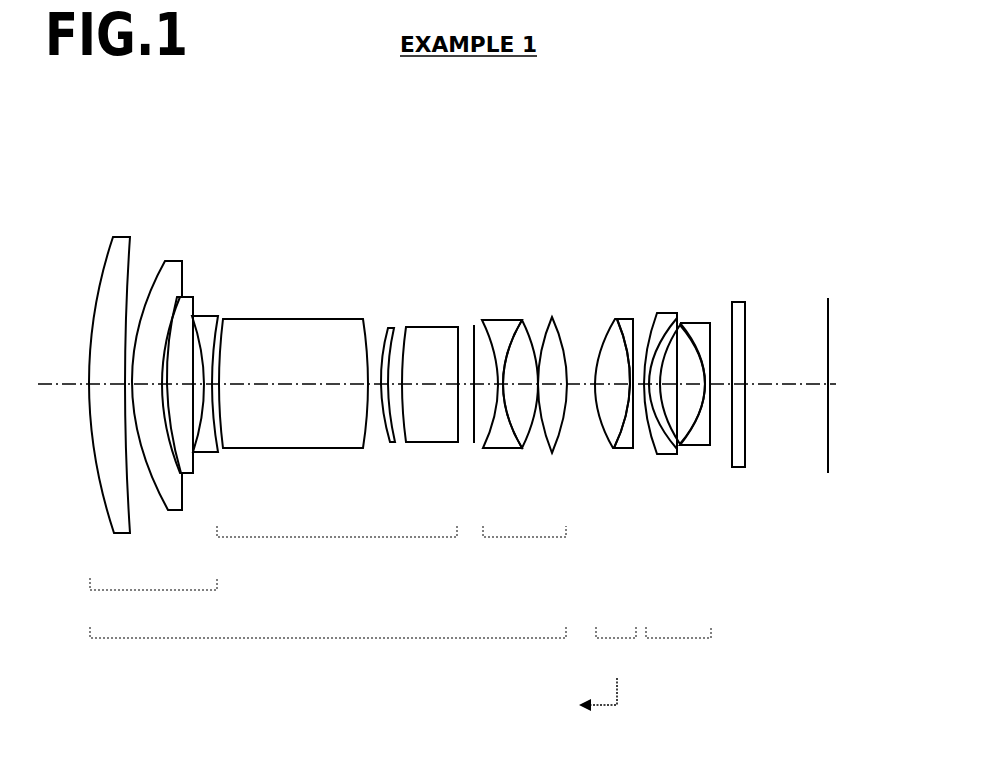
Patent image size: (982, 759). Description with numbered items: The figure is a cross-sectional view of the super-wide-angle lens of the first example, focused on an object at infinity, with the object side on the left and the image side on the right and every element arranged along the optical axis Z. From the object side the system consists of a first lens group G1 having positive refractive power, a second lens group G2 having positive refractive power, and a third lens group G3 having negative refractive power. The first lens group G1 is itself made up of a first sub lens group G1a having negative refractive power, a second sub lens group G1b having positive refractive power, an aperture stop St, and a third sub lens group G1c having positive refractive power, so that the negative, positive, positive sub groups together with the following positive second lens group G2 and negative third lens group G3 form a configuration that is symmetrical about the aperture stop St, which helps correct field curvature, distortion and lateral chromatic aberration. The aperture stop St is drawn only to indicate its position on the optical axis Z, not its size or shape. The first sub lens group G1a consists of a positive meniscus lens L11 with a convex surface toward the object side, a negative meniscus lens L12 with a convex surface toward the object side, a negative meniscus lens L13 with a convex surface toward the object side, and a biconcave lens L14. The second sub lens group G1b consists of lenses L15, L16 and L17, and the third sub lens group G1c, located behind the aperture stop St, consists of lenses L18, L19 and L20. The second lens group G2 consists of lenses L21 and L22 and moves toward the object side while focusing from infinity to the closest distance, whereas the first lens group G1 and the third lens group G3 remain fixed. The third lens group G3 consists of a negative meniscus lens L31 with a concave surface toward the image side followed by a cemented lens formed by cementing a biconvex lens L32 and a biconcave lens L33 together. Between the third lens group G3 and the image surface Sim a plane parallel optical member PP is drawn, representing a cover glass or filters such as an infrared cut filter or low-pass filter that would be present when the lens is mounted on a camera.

The positive meniscus lens L11 is at (118, 237).
The negative meniscus lens L12 is at (172, 261).
The negative meniscus lens L13 is at (183, 297).
The biconcave lens L14 is at (208, 317).
The lens L15 is at (297, 330).
The lens L16 is at (390, 328).
The lens L17 is at (430, 337).
The lens L18 is at (500, 327).
The lens L19 is at (520, 322).
The lens L20 is at (552, 317).
The lens L21 is at (600, 320).
The lens L22 is at (625, 320).
The negative meniscus lens L31 is at (662, 313).
The biconvex lens L32 is at (680, 327).
The biconcave lens L33 is at (700, 327).
The aperture stop St is at (473, 327).
The plane parallel optical member PP is at (738, 303).
The image surface Sim is at (829, 323).
The optical axis Z is at (62, 386).
The first lens group G1 is at (328, 646).
The first sub lens group G1a is at (153, 597).
The second sub lens group G1b is at (337, 546).
The third sub lens group G1c is at (524, 546).
The second lens group G2 is at (616, 647).
The third lens group G3 is at (678, 647).